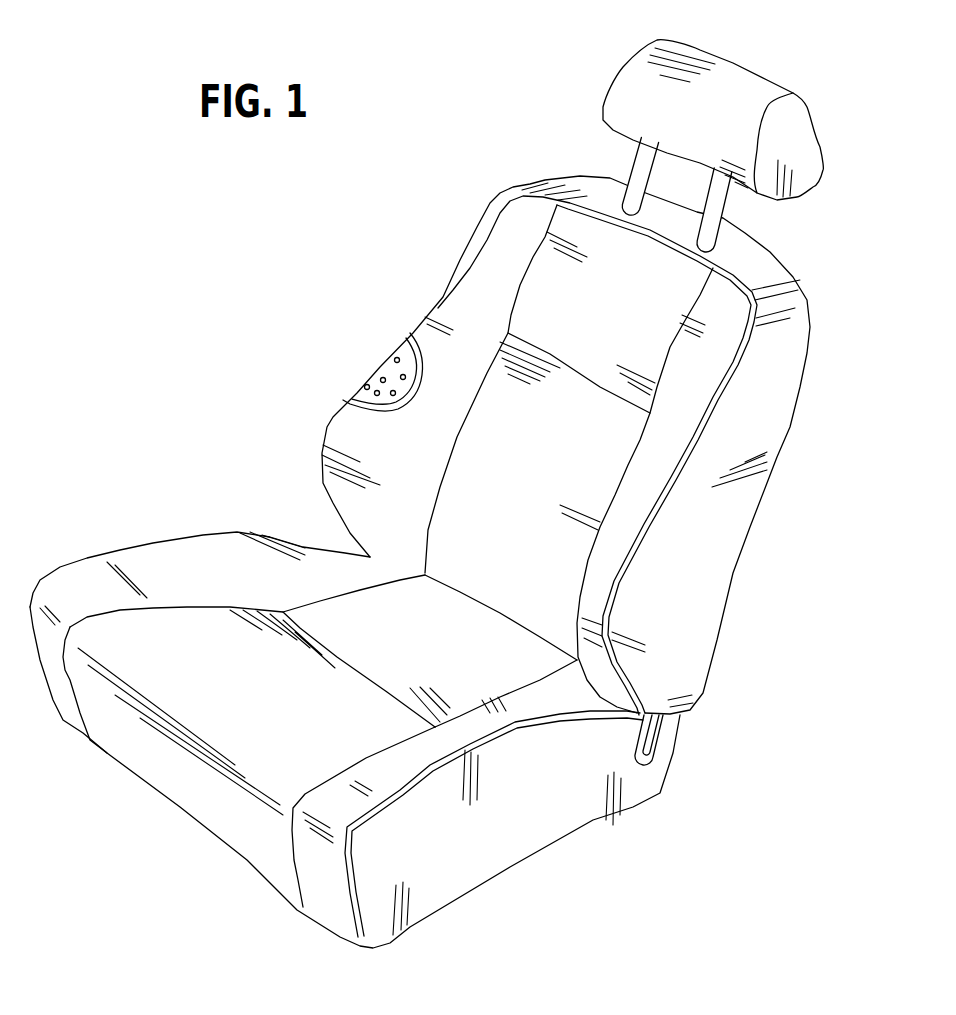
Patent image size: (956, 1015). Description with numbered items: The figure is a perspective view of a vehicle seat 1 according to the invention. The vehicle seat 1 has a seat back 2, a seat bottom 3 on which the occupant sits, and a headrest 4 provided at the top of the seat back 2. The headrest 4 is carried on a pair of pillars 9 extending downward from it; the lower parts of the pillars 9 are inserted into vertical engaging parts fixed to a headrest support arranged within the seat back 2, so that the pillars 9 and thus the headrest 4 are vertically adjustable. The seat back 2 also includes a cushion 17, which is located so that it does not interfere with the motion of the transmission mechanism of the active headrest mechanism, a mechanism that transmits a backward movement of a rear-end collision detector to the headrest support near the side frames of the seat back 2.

The vehicle seat 1 is at (436, 481).
The seat back 2 is at (575, 470).
The seat bottom 3 is at (520, 830).
The headrest 4 is at (733, 72).
The pillars 9 is at (633, 167).
The cushion 17 is at (393, 383).